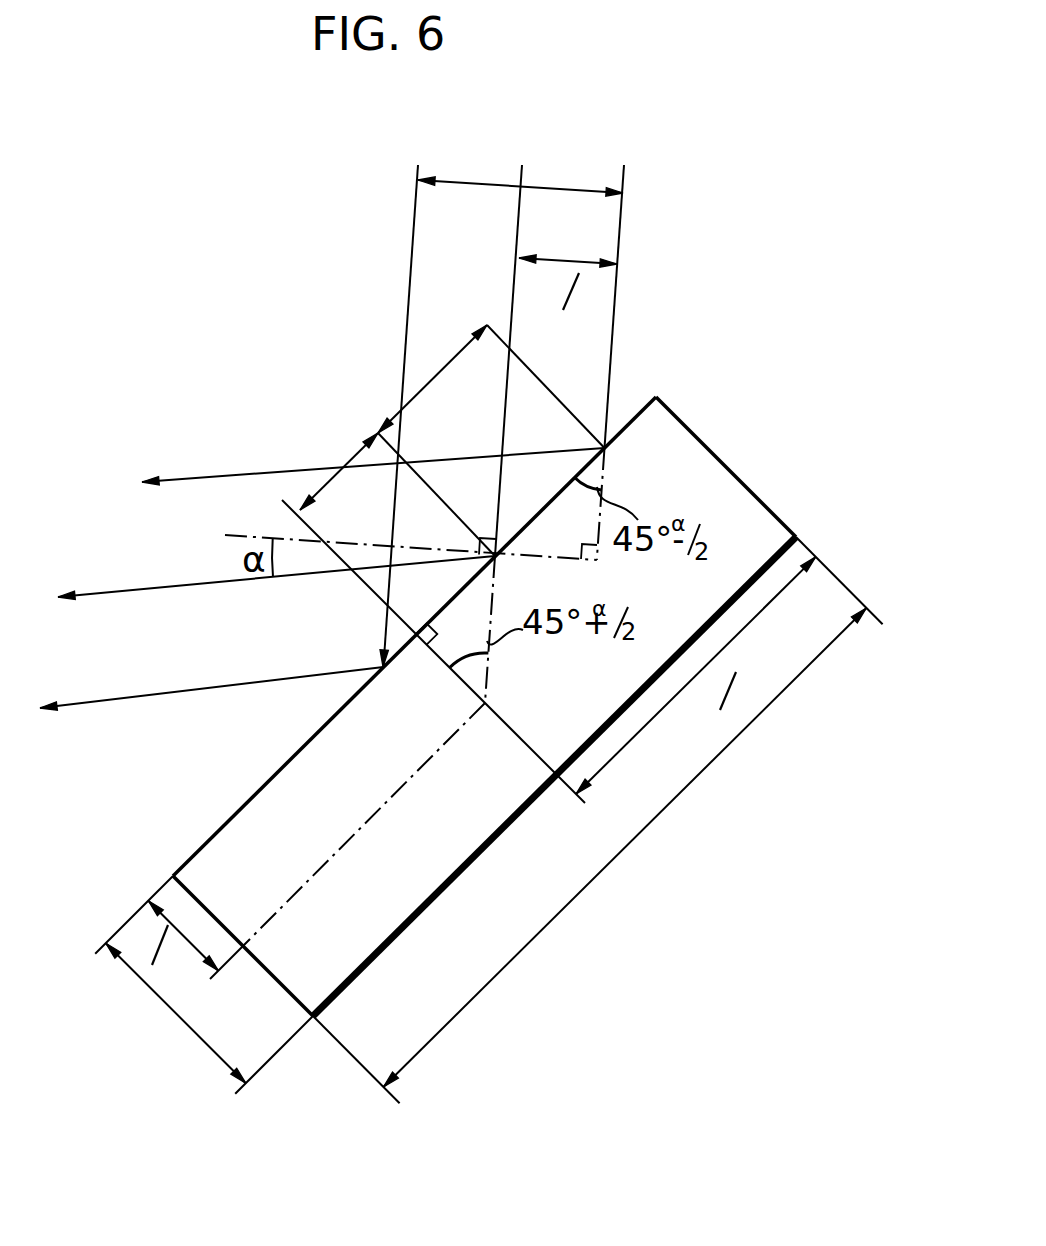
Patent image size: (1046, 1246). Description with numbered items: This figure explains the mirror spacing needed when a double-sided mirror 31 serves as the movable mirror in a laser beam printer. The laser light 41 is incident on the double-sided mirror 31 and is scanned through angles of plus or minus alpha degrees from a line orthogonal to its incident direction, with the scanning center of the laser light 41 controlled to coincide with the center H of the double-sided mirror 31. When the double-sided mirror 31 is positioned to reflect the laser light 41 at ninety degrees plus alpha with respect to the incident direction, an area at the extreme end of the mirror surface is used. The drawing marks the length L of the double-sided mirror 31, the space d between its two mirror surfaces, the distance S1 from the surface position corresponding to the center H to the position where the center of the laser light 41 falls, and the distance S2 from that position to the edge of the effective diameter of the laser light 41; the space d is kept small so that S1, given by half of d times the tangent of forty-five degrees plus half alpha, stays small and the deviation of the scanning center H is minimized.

The double-sided mirror 31 is at (773, 511).
The laser light 41 is at (620, 218).
The length of the double-sided mirror L is at (598, 820).
The space between the mirror surfaces d is at (204, 985).
The center of the double-sided mirror H is at (397, 739).
The distance from mirror center position to laser center position S1 is at (339, 460).
The distance from laser center position to edge of effective diameter S2 is at (432, 375).